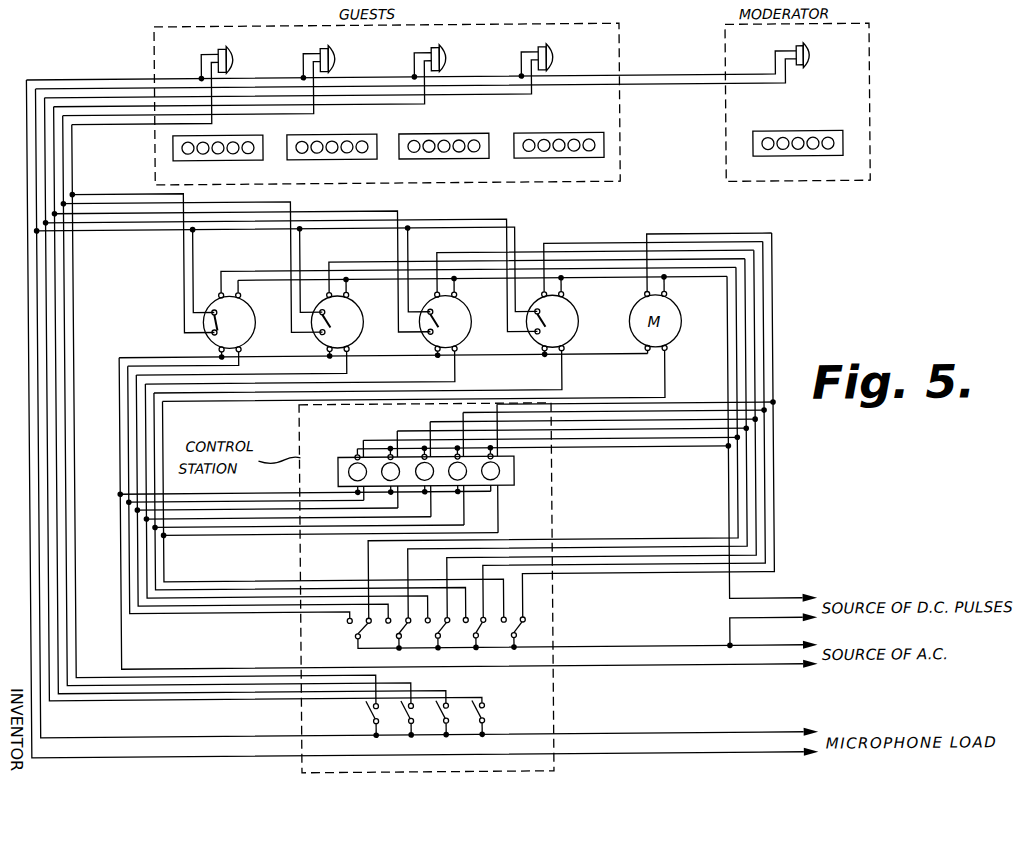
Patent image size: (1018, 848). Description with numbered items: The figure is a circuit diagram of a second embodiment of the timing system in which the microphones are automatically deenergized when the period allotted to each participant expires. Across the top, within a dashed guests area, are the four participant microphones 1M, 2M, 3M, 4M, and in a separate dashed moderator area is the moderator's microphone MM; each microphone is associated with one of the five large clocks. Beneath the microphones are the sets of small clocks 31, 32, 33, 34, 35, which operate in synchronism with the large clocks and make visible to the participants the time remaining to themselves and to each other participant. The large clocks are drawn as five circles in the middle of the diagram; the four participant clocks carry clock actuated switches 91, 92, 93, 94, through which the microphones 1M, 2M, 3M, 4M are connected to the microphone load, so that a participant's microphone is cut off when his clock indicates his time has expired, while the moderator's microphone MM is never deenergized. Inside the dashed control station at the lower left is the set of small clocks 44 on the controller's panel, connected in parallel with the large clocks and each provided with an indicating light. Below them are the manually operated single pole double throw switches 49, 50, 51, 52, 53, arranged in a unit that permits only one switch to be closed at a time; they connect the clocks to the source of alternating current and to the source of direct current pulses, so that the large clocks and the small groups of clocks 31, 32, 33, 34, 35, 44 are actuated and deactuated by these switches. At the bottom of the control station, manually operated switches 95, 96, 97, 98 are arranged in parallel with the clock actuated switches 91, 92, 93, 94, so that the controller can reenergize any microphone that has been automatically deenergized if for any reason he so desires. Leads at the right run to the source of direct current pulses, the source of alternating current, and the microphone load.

The microphone 1M is at (217, 55).
The microphone 2M is at (319, 55).
The microphone 3M is at (430, 54).
The microphone 4M is at (537, 53).
The microphone MM is at (798, 46).
The small clock 31 is at (232, 161).
The small clock 32 is at (346, 161).
The small clock 33 is at (458, 161).
The small clock 34 is at (573, 161).
The small clock 35 is at (812, 161).
The set of small clocks 44 is at (339, 457).
The single pole double throw switch 49 is at (352, 634).
The single pole double throw switch 50 is at (396, 630).
The single pole double throw switch 51 is at (435, 630).
The single pole double throw switch 52 is at (472, 630).
The single pole double throw switch 53 is at (511, 630).
The clock actuated switch 91 is at (212, 346).
The clock actuated switch 92 is at (320, 347).
The clock actuated switch 93 is at (428, 348).
The clock actuated switch 94 is at (535, 349).
The manually operated switch 95 is at (365, 712).
The manually operated switch 96 is at (399, 722).
The manually operated switch 97 is at (434, 722).
The manually operated switch 98 is at (470, 722).